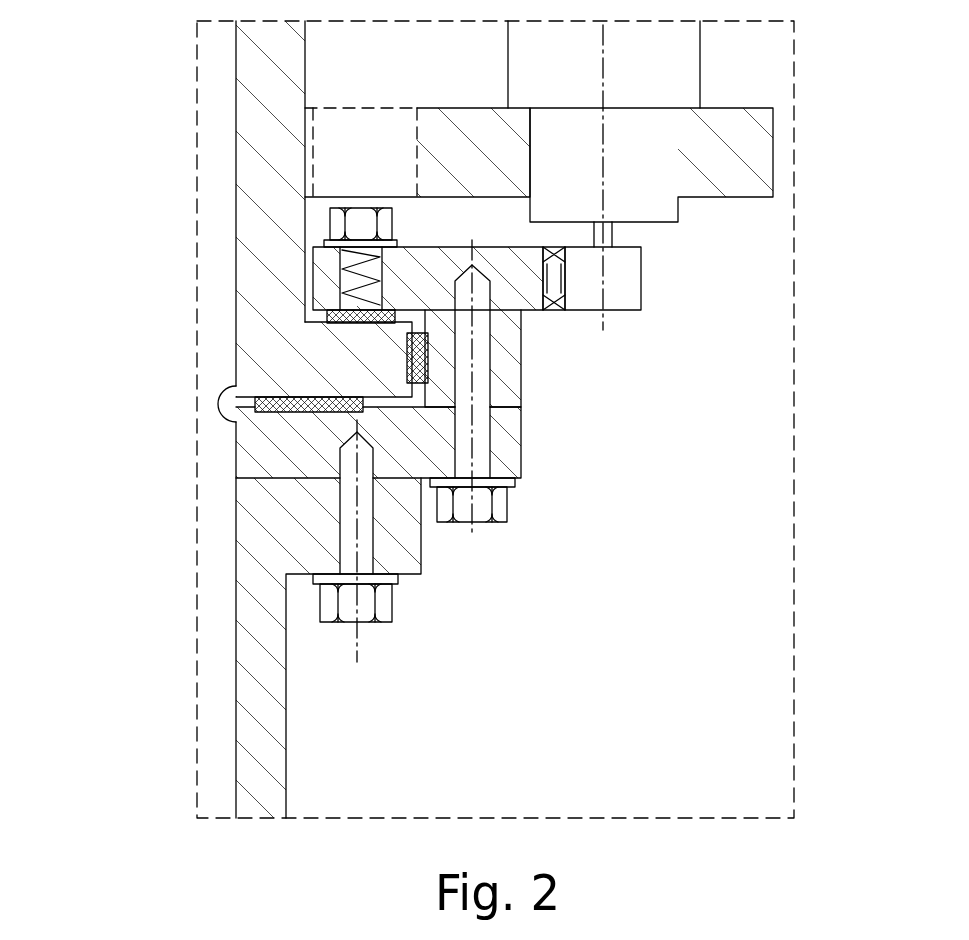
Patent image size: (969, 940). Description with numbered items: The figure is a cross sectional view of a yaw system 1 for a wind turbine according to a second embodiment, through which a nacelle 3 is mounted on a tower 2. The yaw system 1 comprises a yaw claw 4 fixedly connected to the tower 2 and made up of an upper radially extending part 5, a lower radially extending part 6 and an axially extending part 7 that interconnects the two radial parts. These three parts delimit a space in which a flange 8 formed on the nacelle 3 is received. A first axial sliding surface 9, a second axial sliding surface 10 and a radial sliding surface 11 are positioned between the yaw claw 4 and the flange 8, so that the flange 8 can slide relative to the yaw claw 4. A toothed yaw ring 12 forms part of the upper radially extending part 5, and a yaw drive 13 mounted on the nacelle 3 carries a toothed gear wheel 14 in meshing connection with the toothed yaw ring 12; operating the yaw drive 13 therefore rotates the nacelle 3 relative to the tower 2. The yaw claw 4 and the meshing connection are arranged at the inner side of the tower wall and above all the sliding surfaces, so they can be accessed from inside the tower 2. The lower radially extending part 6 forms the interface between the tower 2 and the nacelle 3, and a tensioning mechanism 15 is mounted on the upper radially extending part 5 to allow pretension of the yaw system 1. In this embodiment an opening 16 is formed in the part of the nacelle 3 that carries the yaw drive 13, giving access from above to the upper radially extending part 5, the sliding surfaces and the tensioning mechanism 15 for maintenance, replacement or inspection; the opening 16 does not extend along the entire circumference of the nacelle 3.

The yaw system 1 is at (100, 256).
The tower 2 is at (257, 592).
The nacelle 3 is at (257, 108).
The yaw claw 4 is at (424, 407).
The upper radially extending part 5 is at (507, 268).
The lower radially extending part 6 is at (405, 457).
The axially extending part 7 is at (508, 373).
The flange 8 is at (360, 373).
The first axial sliding surface 9 is at (333, 312).
The second axial sliding surface 10 is at (313, 403).
The radial sliding surface 11 is at (412, 358).
The toothed yaw ring 12 is at (527, 255).
The yaw drive 13 is at (650, 83).
The toothed gear wheel 14 is at (632, 277).
The tensioning mechanism 15 is at (337, 223).
The opening 16 is at (379, 133).